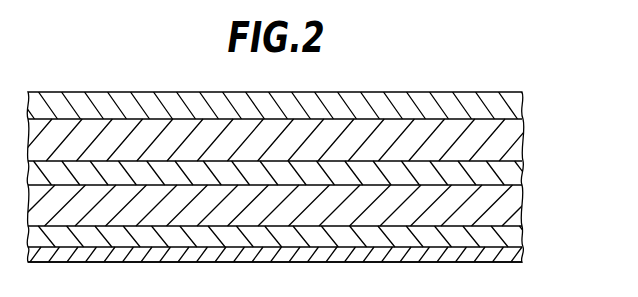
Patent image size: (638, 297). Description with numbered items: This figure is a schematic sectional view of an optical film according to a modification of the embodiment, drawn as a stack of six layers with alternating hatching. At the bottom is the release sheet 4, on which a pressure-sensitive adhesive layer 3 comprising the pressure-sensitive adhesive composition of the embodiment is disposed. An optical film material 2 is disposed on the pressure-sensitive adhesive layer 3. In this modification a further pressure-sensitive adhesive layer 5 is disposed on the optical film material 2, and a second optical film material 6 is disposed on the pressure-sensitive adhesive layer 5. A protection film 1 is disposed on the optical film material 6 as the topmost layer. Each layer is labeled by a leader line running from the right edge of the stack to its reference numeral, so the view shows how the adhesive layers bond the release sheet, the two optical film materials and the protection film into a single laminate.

The protection film 1 is at (511, 106).
The optical film material 6 is at (514, 141).
The pressure-sensitive adhesive layer 5 is at (513, 172).
The optical film material 2 is at (518, 205).
The pressure-sensitive adhesive layer 3 is at (512, 237).
The release sheet 4 is at (518, 258).